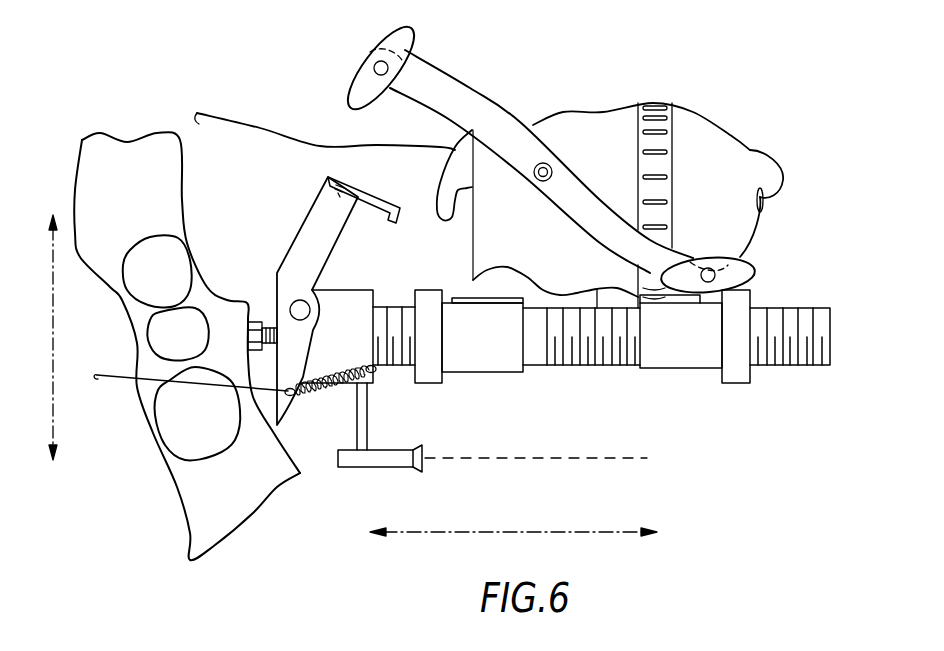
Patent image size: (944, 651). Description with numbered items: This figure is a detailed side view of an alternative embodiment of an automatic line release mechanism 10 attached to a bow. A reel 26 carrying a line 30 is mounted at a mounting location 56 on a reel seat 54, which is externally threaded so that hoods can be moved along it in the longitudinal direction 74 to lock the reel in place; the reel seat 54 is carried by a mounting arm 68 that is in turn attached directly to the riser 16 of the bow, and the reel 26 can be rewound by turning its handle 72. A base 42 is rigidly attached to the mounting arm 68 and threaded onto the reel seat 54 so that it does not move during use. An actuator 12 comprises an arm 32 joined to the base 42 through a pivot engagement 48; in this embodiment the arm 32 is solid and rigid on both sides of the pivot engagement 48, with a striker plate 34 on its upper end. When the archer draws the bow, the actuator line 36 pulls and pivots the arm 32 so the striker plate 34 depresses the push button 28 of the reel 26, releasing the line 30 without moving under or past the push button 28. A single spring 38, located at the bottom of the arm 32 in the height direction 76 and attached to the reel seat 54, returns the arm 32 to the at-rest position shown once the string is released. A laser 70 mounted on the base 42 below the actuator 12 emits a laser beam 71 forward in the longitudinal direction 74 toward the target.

The automatic line release mechanism 10 is at (312, 437).
The actuator 12 is at (322, 290).
The riser 16 is at (78, 172).
The reel 26 is at (585, 123).
The push button 28 is at (447, 163).
The line 30 is at (767, 150).
The arm 32 is at (297, 233).
The striker plate 34 is at (380, 193).
The actuator line 36 is at (118, 383).
The spring 38 is at (325, 389).
The base 42 is at (346, 344).
The pivot engagement 48 is at (290, 303).
The reel seat 54 is at (608, 368).
The mounting location 56 is at (503, 357).
The mounting arm 68 is at (265, 350).
The laser 70 is at (397, 462).
The laser beam 71 is at (547, 460).
The handle 72 is at (435, 80).
The longitudinal direction 74 is at (473, 533).
The height direction 76 is at (55, 303).